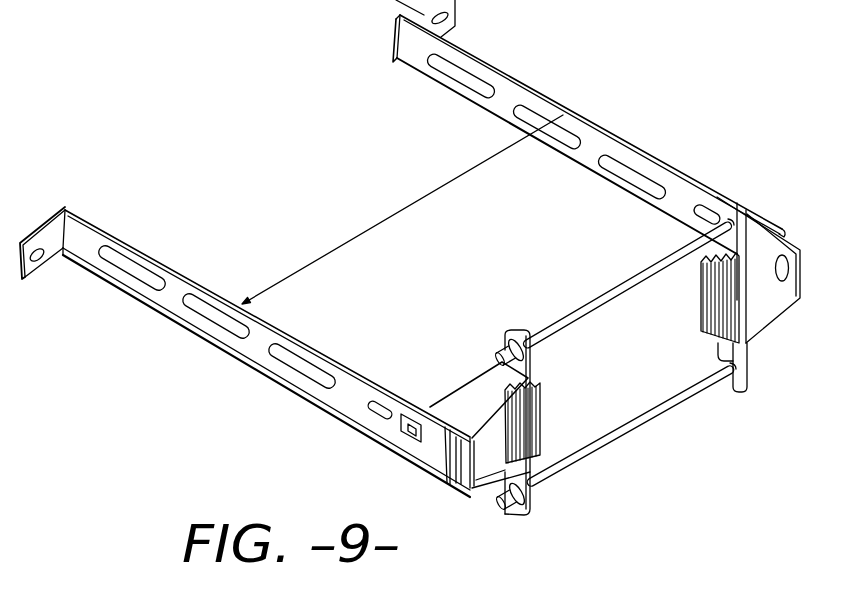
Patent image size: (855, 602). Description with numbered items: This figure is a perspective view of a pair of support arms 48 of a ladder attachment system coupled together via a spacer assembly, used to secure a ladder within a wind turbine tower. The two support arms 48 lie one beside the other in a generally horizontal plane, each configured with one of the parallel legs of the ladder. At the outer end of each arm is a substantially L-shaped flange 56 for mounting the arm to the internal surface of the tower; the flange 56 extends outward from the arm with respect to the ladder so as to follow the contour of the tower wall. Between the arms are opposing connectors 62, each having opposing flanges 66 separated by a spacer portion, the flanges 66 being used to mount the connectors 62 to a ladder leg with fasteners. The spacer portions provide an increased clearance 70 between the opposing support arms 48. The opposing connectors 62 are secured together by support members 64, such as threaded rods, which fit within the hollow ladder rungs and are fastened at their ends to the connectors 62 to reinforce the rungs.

The support arm 48 is at (502, 60).
The flange 56 is at (39, 231).
The connector 62 is at (459, 377).
The support member 64 is at (632, 289).
The opposing flange 66 is at (717, 204).
The increased clearance 70 is at (381, 220).